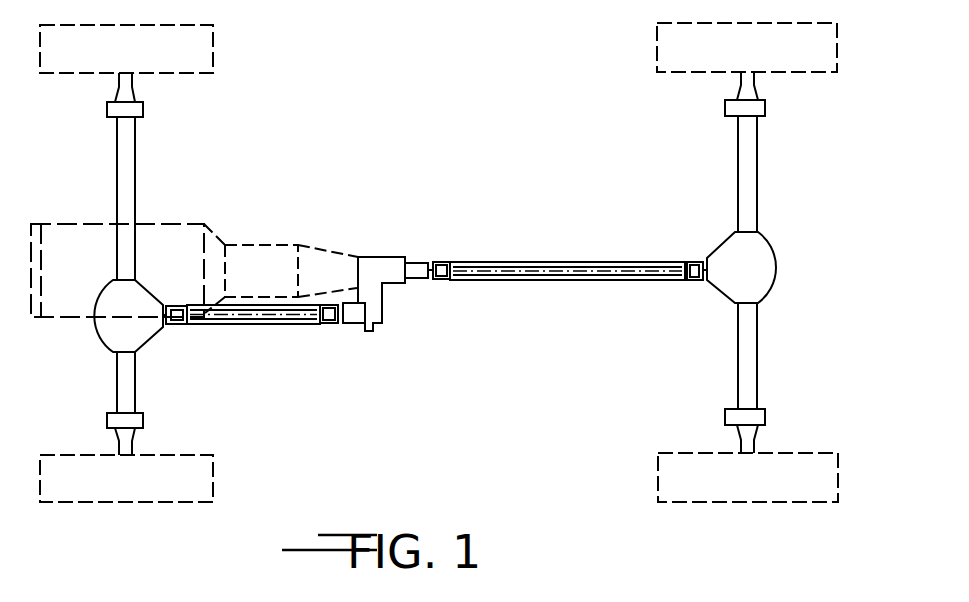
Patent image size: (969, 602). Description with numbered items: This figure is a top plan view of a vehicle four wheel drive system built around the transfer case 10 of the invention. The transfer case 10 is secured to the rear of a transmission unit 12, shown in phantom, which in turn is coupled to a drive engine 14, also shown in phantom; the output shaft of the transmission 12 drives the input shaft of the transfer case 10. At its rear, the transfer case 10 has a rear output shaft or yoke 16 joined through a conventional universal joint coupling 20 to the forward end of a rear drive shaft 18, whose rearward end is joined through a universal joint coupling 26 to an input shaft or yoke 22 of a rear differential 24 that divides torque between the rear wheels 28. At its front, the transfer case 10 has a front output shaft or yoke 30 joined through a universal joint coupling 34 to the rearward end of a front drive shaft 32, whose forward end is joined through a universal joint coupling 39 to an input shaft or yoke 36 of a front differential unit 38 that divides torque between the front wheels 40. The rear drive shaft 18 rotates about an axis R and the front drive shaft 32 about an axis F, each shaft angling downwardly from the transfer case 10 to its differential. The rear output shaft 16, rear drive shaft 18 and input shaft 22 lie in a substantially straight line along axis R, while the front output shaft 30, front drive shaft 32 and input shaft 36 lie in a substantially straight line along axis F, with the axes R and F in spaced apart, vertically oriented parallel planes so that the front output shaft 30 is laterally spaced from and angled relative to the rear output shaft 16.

The transfer case 10 is at (389, 255).
The transmission unit 12 is at (253, 245).
The drive engine 14 is at (184, 224).
The rear output shaft 16 is at (465, 272).
The rear drive shaft 18 is at (567, 268).
The universal joint coupling 20 is at (446, 280).
The input shaft 22 is at (667, 273).
The rear differential 24 is at (762, 273).
The universal joint coupling 26 is at (688, 281).
The rear wheels 28 is at (656, 62).
The front output shaft 30 is at (336, 323).
The front drive shaft 32 is at (264, 358).
The universal joint coupling 34 is at (333, 305).
The input shaft 36 is at (193, 310).
The front differential unit 38 is at (113, 325).
The universal joint coupling 39 is at (174, 306).
The front wheels 40 is at (214, 36).
The axis F is at (255, 324).
The axis R is at (517, 281).